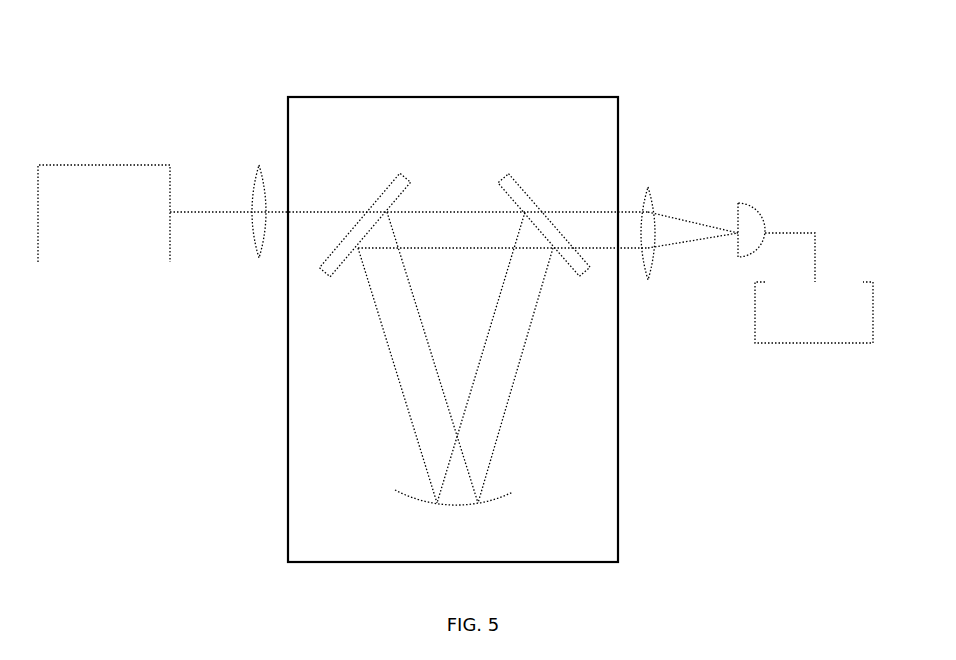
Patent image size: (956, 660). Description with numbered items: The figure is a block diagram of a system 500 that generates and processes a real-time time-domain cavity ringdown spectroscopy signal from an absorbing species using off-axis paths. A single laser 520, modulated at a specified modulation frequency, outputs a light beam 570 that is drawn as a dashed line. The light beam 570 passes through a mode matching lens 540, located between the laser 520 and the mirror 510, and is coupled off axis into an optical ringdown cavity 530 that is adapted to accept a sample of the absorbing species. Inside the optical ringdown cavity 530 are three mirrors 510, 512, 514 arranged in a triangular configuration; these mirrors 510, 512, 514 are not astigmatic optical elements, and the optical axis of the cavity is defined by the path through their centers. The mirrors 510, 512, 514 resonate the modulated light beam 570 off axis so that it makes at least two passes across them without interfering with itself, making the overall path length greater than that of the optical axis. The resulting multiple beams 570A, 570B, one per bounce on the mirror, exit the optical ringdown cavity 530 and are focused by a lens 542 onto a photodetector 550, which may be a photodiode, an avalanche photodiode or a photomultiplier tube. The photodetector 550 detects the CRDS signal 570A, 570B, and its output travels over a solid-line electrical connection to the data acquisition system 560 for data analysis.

The system 500 is at (680, 72).
The mirror 510 is at (400, 182).
The mirror 512 is at (517, 497).
The mirror 514 is at (508, 183).
The laser 520 is at (90, 165).
The optical ringdown cavity 530 is at (287, 350).
The mode matching lens 540 is at (252, 182).
The lens 542 is at (650, 280).
The photodetector 550 is at (757, 218).
The data acquisition system 560 is at (783, 345).
The light beam 570 is at (212, 213).
The CRDS signal beam 570A is at (678, 218).
The CRDS signal beam 570B is at (682, 240).